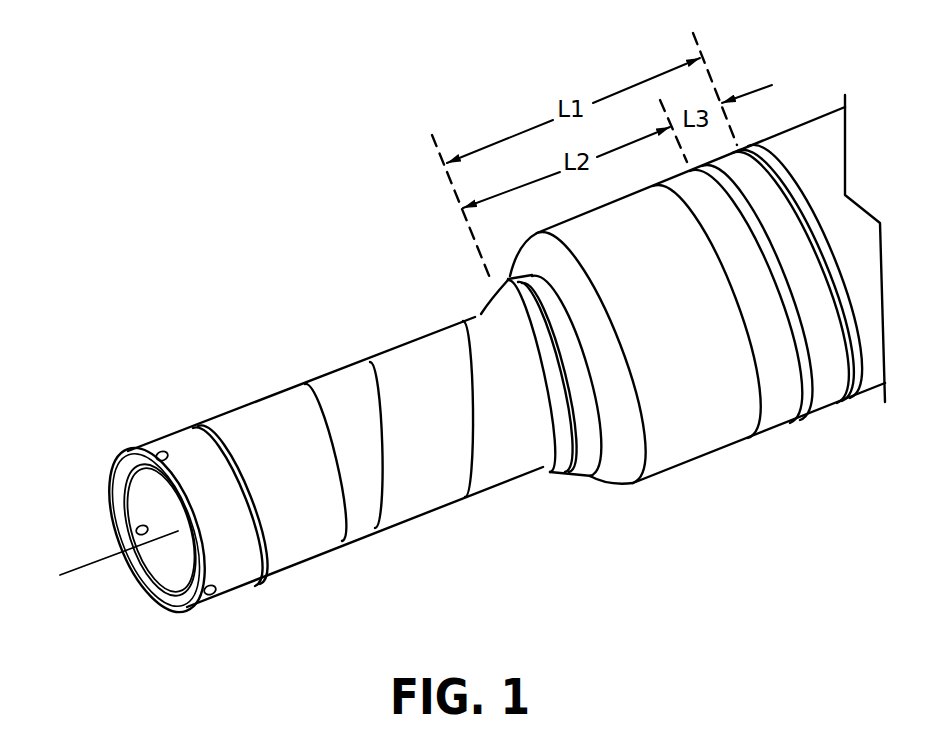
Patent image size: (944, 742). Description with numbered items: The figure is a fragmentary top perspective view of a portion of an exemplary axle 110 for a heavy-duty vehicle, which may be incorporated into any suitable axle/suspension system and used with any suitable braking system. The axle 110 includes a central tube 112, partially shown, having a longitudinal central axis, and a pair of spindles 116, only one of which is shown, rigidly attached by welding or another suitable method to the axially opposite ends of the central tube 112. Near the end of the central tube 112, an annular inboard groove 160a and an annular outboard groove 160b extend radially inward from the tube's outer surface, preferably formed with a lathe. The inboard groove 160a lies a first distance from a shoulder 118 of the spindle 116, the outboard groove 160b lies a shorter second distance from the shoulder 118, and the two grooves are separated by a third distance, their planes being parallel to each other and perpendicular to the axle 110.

The axle 110 is at (342, 220).
The central tube 112 is at (774, 116).
The spindle 116 is at (613, 490).
The shoulder 118 is at (563, 478).
The annular inboard groove 160a is at (845, 412).
The annular outboard groove 160b is at (780, 433).